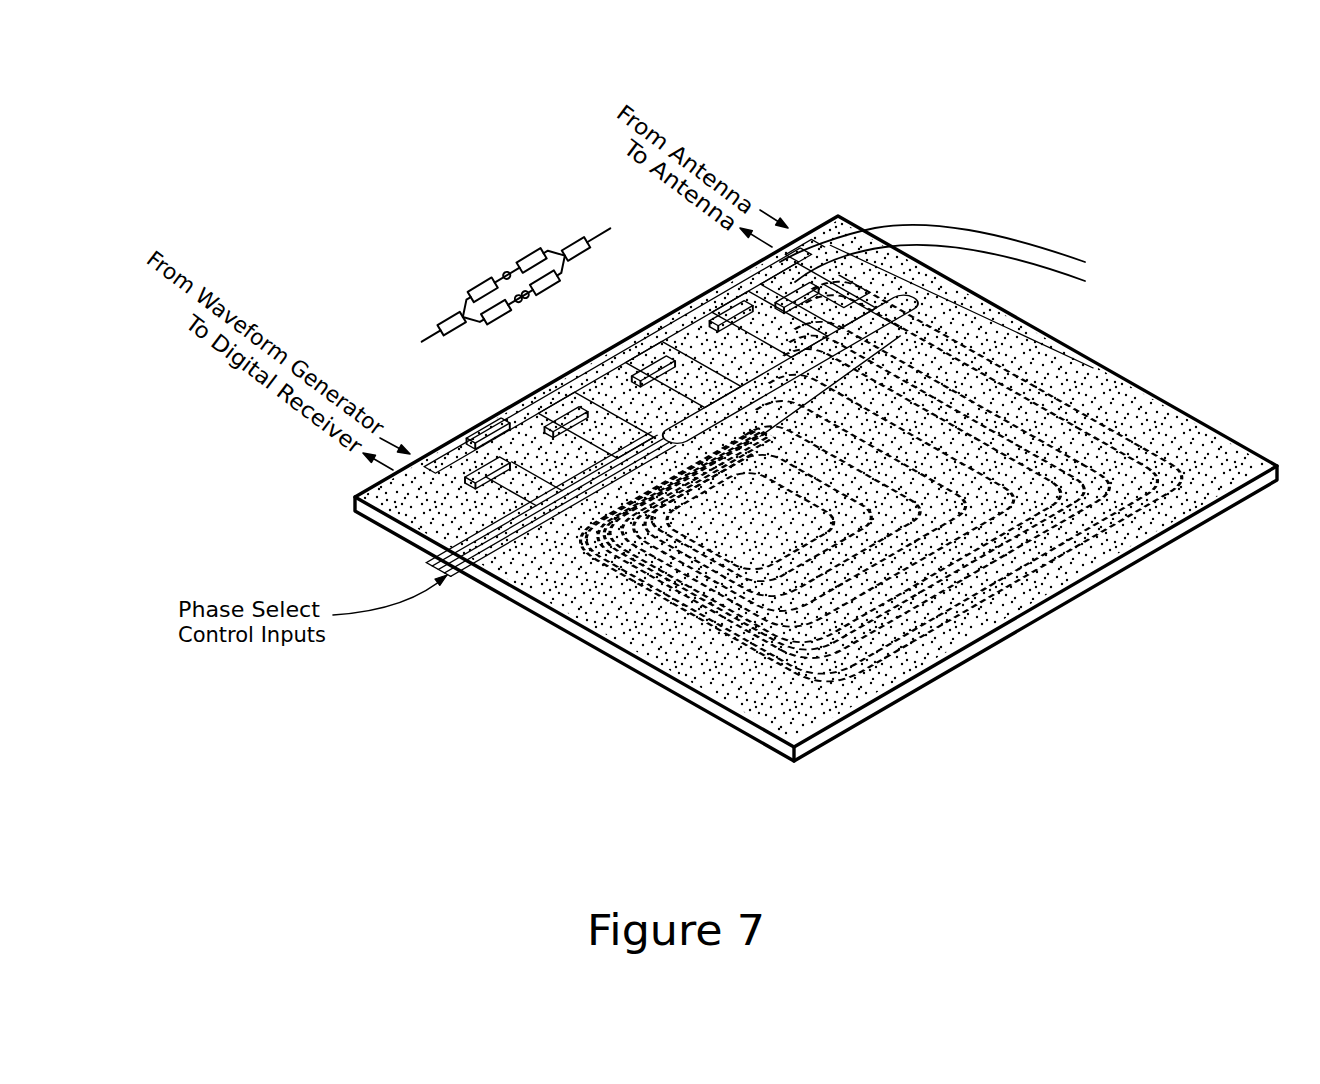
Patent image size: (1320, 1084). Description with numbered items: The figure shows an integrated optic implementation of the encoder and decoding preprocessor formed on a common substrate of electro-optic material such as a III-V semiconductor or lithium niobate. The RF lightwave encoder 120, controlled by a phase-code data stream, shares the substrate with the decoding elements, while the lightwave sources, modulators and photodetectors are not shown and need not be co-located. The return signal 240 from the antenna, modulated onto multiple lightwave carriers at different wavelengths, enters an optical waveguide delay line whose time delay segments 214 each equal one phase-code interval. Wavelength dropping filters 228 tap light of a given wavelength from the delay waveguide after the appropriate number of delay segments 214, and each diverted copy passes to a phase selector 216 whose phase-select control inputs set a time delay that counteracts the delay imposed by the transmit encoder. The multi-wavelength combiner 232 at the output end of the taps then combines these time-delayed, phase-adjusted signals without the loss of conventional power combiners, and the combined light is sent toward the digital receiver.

The RF lightwave encoder 120 is at (523, 168).
The phase selector 216 is at (737, 298).
The return signal 240 is at (782, 217).
The wavelength dropping filter 228 is at (1030, 266).
The multi-wavelength combiner 232 is at (492, 472).
The time delay segment 214 is at (917, 685).